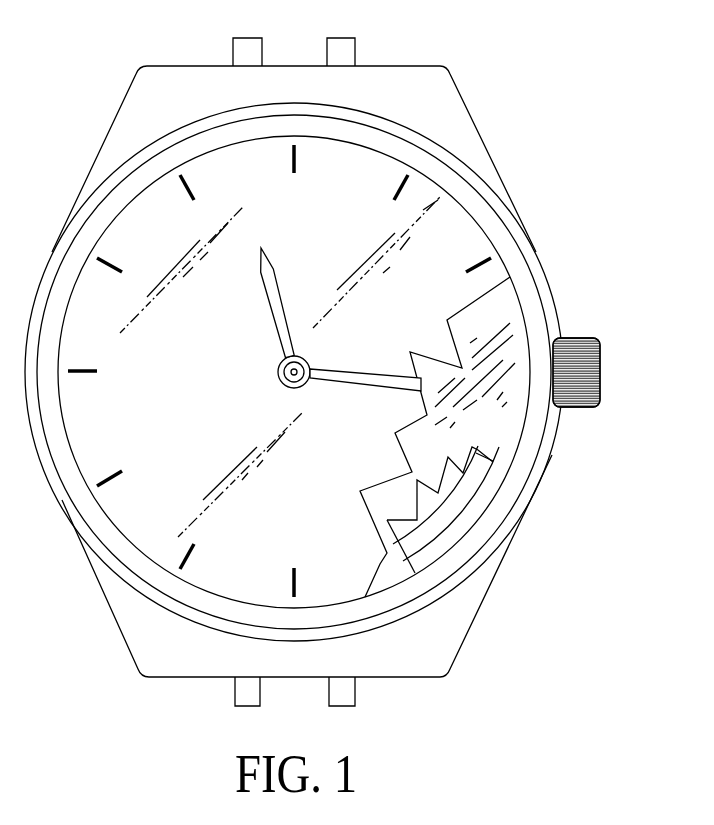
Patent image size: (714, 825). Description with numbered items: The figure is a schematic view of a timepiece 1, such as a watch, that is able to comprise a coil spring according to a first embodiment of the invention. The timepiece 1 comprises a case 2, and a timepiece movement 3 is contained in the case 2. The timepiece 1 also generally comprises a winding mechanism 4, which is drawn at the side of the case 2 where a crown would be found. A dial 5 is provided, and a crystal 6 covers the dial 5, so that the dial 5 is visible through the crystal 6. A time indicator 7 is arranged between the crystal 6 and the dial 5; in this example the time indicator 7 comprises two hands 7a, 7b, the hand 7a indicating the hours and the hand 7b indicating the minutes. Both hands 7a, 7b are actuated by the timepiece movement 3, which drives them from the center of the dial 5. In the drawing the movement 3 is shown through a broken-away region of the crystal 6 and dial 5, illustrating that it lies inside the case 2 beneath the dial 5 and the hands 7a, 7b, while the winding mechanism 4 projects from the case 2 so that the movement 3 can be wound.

The timepiece 1 is at (512, 137).
The case 2 is at (460, 583).
The timepiece movement 3 is at (457, 505).
The winding mechanism 4 is at (585, 345).
The dial 5 is at (450, 413).
The crystal 6 is at (360, 197).
The time indicator 7 is at (292, 357).
The hour hand 7a is at (278, 328).
The minute hand 7b is at (383, 383).